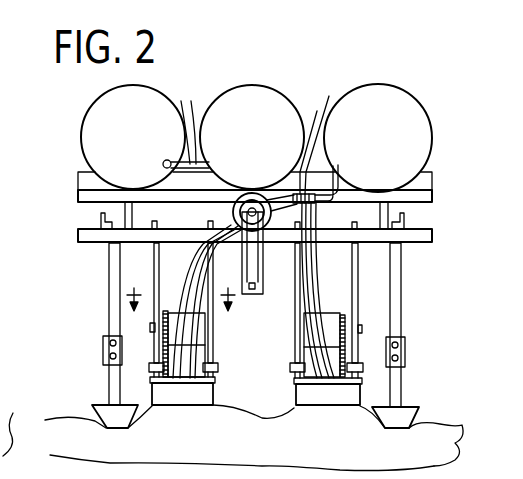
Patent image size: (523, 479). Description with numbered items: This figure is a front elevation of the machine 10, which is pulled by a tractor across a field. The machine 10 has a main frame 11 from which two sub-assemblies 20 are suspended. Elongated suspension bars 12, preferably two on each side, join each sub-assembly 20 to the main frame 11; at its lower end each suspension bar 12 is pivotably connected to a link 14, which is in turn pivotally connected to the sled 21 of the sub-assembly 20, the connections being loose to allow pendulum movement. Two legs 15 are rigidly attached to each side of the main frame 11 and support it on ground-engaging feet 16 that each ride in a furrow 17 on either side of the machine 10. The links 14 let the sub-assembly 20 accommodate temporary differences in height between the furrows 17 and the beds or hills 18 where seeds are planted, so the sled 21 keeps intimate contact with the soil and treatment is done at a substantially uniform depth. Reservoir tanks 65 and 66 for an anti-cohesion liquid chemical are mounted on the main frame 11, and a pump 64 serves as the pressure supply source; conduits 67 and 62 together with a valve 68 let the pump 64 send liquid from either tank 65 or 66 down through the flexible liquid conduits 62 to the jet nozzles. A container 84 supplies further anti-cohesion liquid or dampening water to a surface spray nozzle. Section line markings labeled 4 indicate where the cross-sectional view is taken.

The section line 4- 4 is at (181, 311).
The machine 10 is at (343, 59).
The main frame 11 is at (78, 236).
The suspension bars 12 is at (155, 264).
The link 14 is at (149, 368).
The legs 15 is at (109, 268).
The ground-engaging feet 16 is at (118, 418).
The furrow 17 is at (87, 418).
The beds or hills 18 is at (192, 445).
The sub-assembly 20 is at (281, 352).
The sled 21 is at (170, 397).
The flexible liquid conduit 62 is at (198, 272).
The pump 64 is at (273, 225).
The reservoir tank 65 is at (360, 152).
The reservoir tank 66 is at (115, 151).
The conduit 67 is at (331, 222).
The valve 68 is at (329, 96).
The container 84 is at (237, 151).